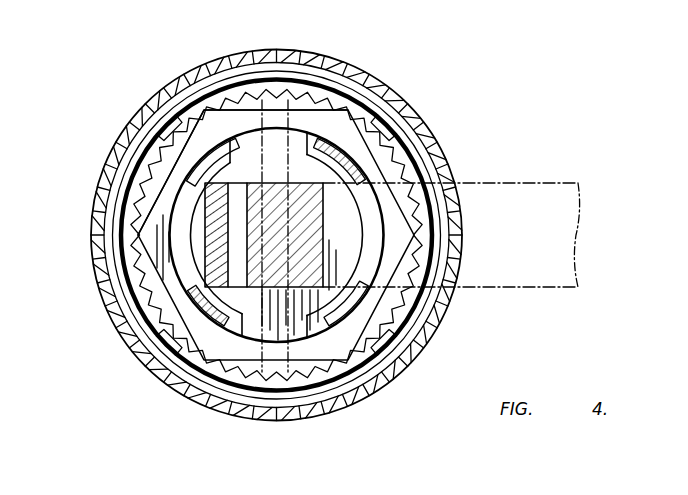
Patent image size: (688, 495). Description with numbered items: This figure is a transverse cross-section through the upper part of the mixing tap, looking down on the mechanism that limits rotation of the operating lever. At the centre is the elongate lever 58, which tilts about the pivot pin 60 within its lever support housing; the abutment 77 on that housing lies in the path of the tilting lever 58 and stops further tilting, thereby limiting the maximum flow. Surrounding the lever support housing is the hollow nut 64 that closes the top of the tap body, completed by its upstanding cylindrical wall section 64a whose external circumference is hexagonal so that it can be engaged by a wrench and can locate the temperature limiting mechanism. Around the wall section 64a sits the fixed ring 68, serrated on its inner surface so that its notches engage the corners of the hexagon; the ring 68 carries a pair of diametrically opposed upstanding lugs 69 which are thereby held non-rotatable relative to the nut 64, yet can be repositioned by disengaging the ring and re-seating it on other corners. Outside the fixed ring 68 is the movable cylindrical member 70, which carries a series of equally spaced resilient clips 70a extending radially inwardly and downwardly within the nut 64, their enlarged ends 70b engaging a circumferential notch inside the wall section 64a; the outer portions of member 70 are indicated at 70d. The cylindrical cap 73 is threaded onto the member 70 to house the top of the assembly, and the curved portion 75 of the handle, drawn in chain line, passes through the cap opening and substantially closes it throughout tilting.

The elongate lever 58 is at (252, 288).
The pivot pin 60 is at (328, 80).
The nut 64 is at (223, 350).
The upstanding cylindrical wall section 64a is at (227, 120).
The fixed ring 68 is at (262, 380).
The lugs 69 is at (353, 113).
The cylindrical member 70 is at (111, 258).
The clips 70a is at (197, 163).
The enlarged ends 70b is at (380, 345).
The ring band 70d is at (163, 137).
The cylindrical cap 73 is at (298, 53).
The curved portion of the handle 75 is at (538, 183).
The abutment 77 is at (190, 196).